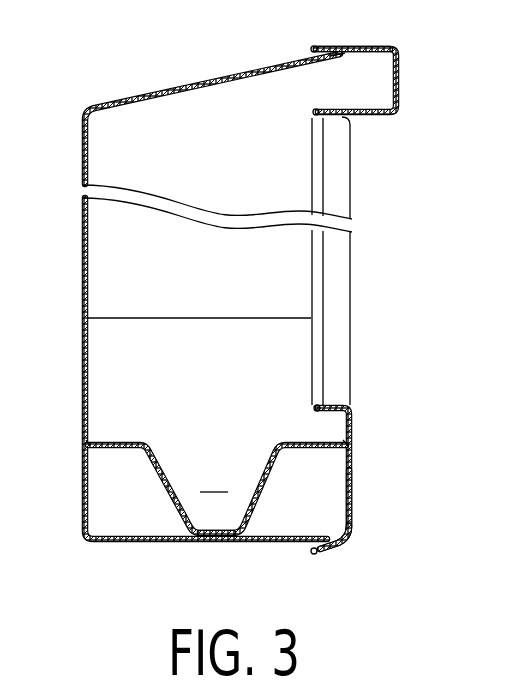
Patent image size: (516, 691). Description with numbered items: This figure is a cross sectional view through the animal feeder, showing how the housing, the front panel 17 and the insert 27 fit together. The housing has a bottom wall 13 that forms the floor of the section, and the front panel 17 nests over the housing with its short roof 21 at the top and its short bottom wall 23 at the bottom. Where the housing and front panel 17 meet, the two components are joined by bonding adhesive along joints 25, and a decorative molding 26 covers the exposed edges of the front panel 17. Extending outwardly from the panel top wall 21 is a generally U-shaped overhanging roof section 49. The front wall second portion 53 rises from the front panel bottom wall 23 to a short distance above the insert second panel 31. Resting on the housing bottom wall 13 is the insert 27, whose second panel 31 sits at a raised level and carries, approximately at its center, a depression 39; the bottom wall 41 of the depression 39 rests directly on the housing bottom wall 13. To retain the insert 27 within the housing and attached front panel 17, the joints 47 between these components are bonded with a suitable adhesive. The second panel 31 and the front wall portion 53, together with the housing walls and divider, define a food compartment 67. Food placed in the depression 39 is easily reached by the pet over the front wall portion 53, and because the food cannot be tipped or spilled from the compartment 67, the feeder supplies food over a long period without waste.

The bottom wall 13 is at (121, 546).
The front panel 17 is at (356, 467).
The short roof 21 is at (362, 46).
The short bottom wall 23 is at (333, 545).
The joints 25 is at (344, 55).
The decorative molding 26 is at (312, 46).
The insert 27 is at (214, 440).
The second panel 31 is at (300, 441).
The depression 39 is at (214, 481).
The bottom wall of the depression 41 is at (212, 537).
The joints 47 is at (90, 442).
The overhanging roof section 49 is at (399, 88).
The front wall second portion 53 is at (350, 521).
The food compartment 67 is at (197, 300).